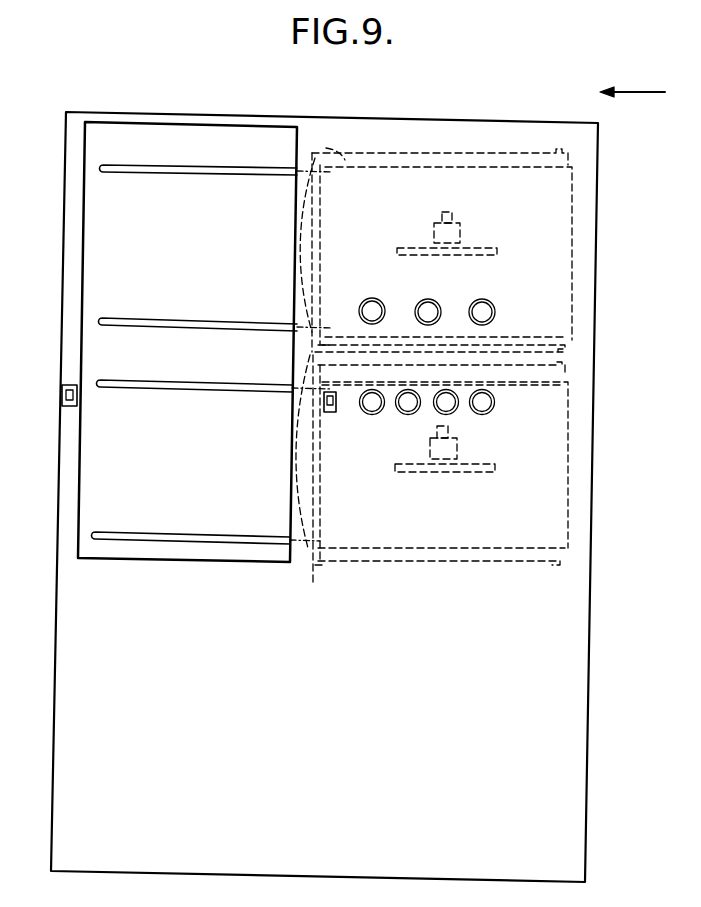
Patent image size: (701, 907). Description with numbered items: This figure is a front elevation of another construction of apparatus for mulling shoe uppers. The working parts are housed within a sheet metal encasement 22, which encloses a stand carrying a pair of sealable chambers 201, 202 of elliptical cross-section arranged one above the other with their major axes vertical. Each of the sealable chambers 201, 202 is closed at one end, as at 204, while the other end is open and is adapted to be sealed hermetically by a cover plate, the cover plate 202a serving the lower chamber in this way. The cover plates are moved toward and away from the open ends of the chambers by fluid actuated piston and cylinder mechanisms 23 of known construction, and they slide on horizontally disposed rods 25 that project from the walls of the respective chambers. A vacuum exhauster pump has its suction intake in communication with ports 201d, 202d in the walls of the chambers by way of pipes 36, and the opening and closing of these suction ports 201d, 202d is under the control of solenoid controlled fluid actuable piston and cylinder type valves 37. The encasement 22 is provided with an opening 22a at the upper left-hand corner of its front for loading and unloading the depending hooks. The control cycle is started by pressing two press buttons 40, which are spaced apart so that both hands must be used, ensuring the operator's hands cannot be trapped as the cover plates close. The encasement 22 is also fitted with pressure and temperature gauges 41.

The sheet metal encasement 22 is at (598, 236).
The opening 22a is at (80, 470).
The fluid actuated piston and cylinder mechanism 23 is at (370, 156).
The horizontally disposed rod 25 is at (196, 172).
The pipe 36 is at (455, 219).
The solenoid controlled fluid actuable piston and cylinder type valve 37 is at (462, 236).
The press button 40 is at (62, 397).
The pressure and temperature gauge 41 is at (428, 302).
The sealable chamber 201 is at (412, 178).
The port 201d is at (300, 228).
The sealable chamber 202 is at (452, 548).
The port 202d is at (470, 478).
The cover plate 202a is at (297, 478).
The closed end 204 is at (574, 273).